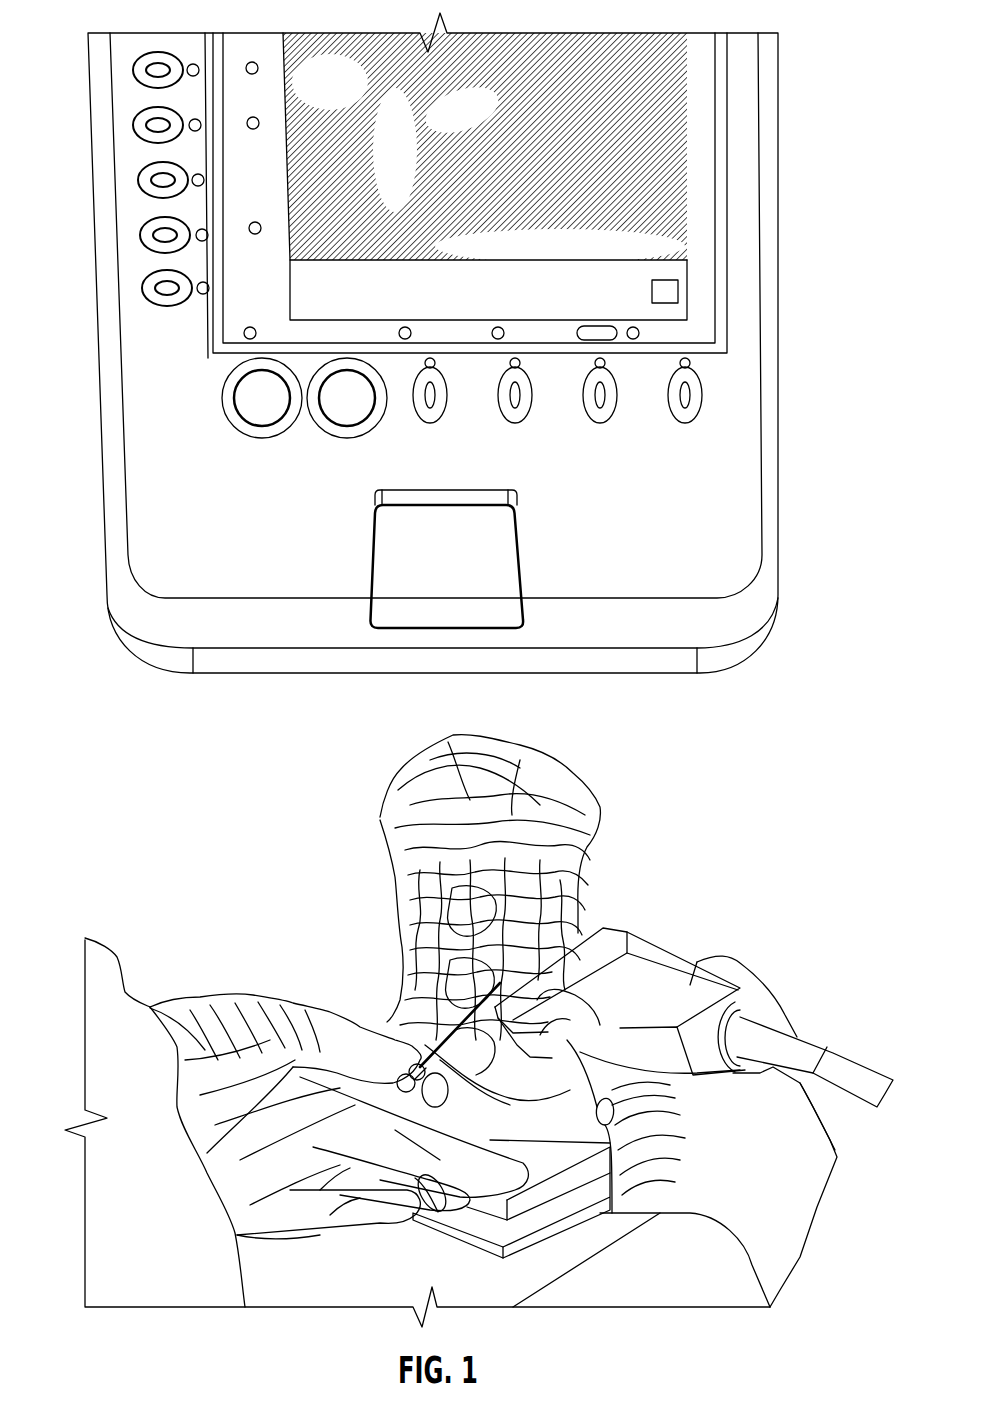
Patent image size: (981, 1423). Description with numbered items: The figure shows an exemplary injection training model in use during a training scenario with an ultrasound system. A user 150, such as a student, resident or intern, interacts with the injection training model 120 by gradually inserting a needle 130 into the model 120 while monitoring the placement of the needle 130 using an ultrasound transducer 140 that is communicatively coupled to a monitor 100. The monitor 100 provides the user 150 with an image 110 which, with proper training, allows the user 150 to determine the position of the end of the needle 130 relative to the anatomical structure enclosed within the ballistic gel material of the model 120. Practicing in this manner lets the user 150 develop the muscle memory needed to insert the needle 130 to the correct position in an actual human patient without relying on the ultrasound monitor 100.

The monitor 100 is at (815, 180).
The image 110 is at (667, 238).
The injection training model 120 is at (590, 763).
The needle 130 is at (460, 1002).
The ultrasound transducer 140 is at (643, 977).
The user 150 is at (143, 980).